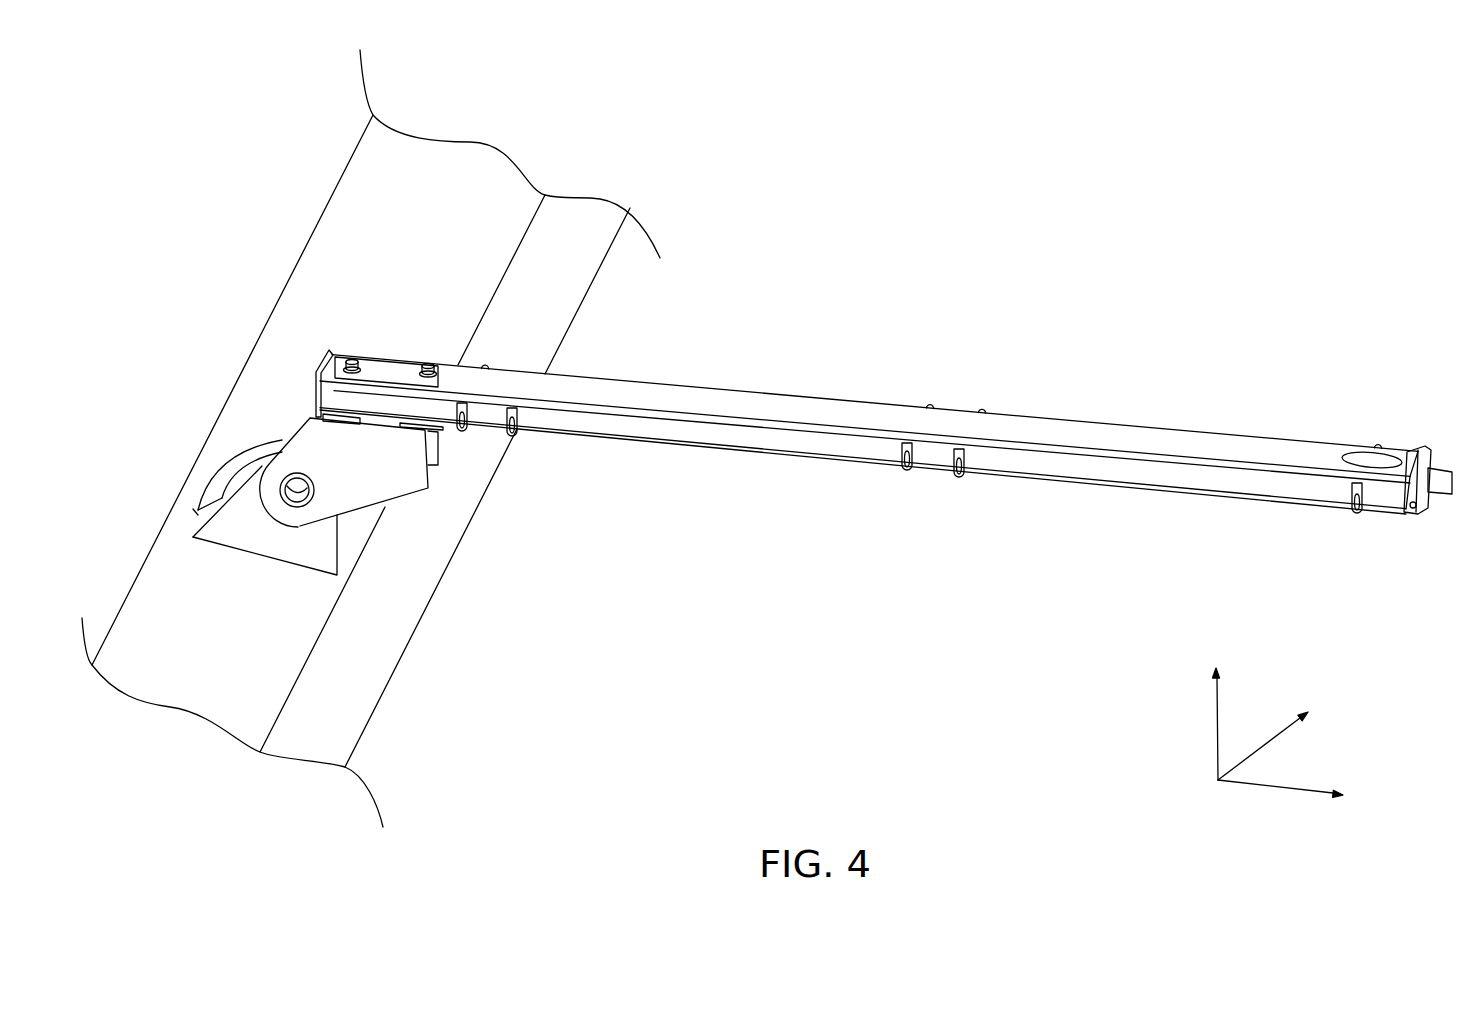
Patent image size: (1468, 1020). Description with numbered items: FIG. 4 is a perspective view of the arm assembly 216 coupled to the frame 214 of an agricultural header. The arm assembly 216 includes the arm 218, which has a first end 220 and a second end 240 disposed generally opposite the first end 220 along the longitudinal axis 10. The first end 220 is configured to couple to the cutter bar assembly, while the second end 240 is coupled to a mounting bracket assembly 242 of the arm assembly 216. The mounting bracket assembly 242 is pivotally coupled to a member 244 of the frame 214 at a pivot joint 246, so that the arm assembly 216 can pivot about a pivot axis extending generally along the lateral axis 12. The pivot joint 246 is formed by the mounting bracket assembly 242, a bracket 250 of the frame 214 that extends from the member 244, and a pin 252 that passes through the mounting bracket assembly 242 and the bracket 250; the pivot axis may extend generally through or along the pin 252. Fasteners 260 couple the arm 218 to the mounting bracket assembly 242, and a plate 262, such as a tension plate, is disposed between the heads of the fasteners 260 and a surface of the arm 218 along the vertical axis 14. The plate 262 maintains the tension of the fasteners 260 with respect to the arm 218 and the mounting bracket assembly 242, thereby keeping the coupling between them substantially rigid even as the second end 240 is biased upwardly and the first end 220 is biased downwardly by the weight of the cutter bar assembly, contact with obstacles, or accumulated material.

The longitudinal axis 10 is at (1262, 793).
The lateral axis 12 is at (1270, 750).
The vertical axis 14 is at (1216, 745).
The frame 214 is at (140, 185).
The arm assembly 216 is at (1260, 385).
The arm 218 is at (889, 403).
The first end 220 is at (1388, 410).
The second end 240 is at (325, 270).
The mounting bracket assembly 242 is at (360, 488).
The member 244 is at (468, 152).
The pivot joint 246 is at (145, 360).
The bracket 250 is at (232, 476).
The pin 252 is at (283, 507).
The fasteners 260 is at (349, 360).
The plate 262 is at (385, 360).